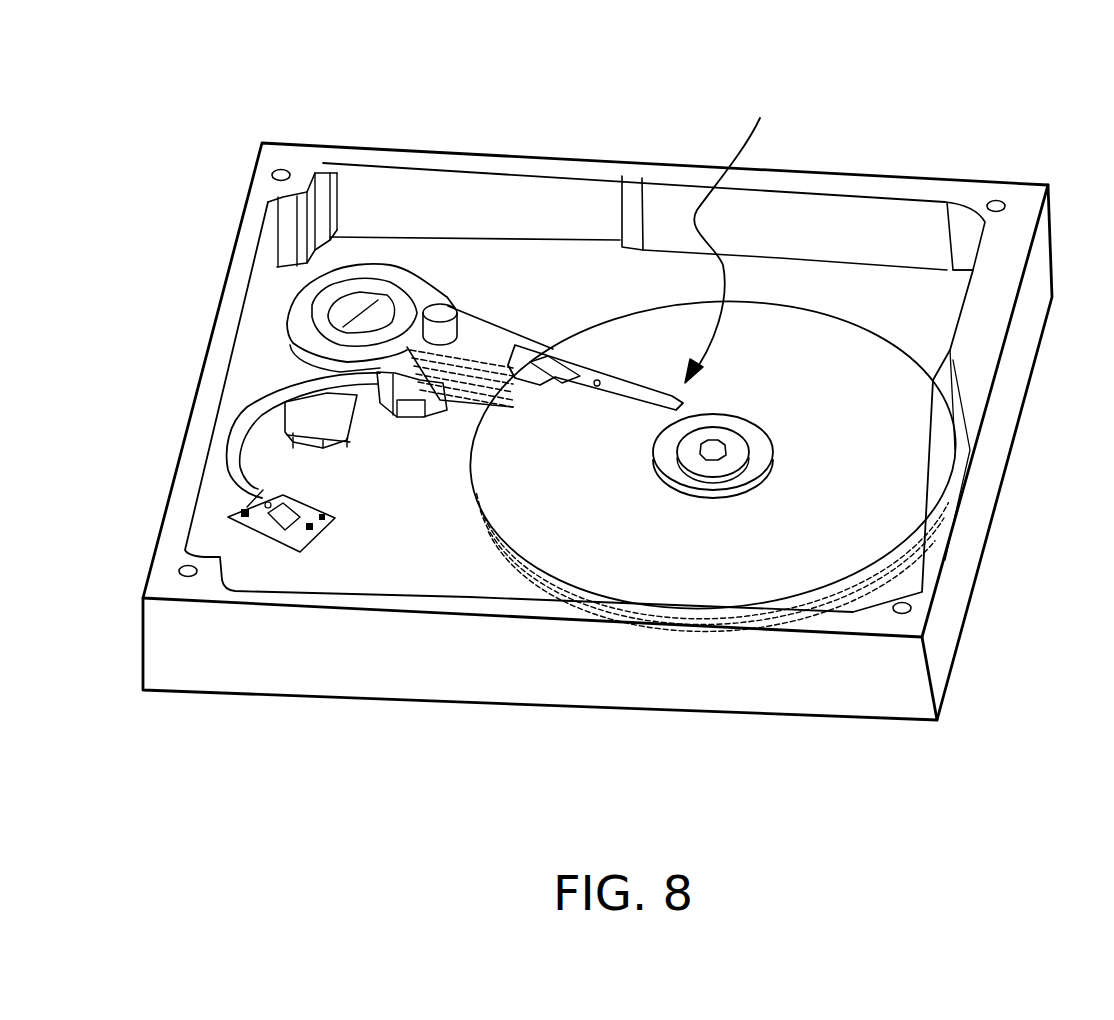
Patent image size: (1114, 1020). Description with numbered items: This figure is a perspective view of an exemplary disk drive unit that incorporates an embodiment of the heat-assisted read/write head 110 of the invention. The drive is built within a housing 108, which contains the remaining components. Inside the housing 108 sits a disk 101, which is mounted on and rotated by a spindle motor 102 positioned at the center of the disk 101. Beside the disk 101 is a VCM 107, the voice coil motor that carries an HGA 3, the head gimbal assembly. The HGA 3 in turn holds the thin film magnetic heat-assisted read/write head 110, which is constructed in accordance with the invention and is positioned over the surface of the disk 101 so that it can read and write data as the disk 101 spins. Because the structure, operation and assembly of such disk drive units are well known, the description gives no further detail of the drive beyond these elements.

The HGA 3 is at (495, 340).
The disk 101 is at (768, 377).
The spindle motor 102 is at (737, 445).
The VCM 107 is at (325, 413).
The housing 108 is at (508, 662).
The heat-assisted read/write head 110 is at (738, 235).